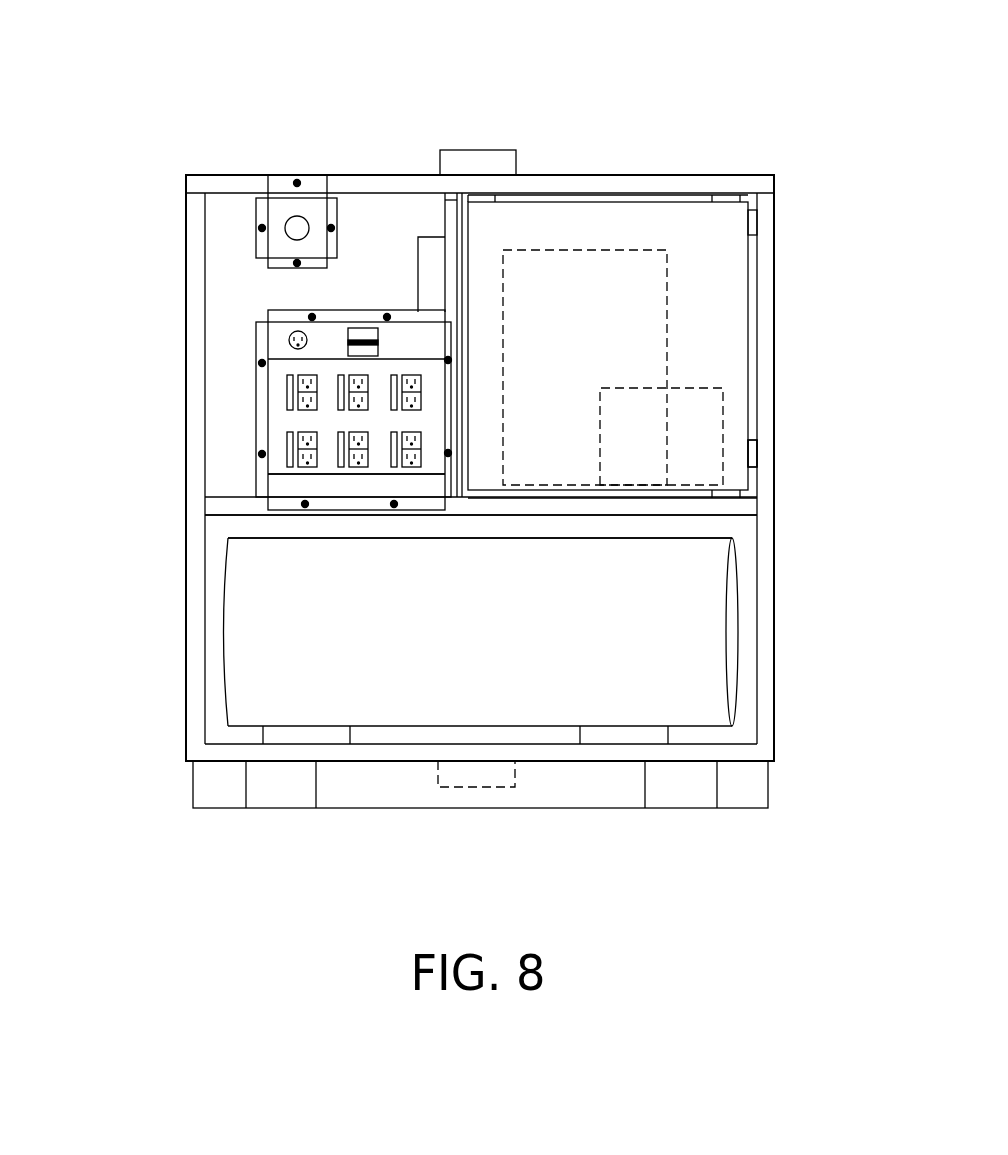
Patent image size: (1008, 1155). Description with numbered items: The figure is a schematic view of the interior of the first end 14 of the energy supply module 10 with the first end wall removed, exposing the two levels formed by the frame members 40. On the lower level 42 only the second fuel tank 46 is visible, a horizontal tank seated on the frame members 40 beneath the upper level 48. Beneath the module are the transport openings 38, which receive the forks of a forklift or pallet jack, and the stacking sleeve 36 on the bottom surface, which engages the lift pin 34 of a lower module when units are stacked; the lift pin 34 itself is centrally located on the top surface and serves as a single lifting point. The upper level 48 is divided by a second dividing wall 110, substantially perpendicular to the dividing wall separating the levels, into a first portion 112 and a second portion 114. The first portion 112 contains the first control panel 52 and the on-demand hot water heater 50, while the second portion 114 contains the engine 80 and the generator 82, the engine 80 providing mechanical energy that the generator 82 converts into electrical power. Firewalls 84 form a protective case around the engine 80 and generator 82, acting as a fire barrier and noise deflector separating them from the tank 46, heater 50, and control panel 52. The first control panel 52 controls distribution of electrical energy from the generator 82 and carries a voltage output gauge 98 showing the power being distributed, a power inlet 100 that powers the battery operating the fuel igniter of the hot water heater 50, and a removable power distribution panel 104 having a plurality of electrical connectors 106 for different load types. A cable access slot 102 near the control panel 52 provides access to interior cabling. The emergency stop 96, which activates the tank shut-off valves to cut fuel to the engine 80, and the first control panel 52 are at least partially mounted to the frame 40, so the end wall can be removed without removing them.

The energy supply module 10 is at (203, 88).
The first end 14 is at (228, 735).
The lift pin 34 is at (498, 163).
The stacking sleeve 36 is at (482, 772).
The transport openings 38 is at (682, 795).
The frame members 40 is at (777, 522).
The lower level 42 is at (757, 541).
The second fuel tank 46 is at (495, 641).
The upper level 48 is at (740, 447).
The hot water heater 50 is at (435, 238).
The first control panel 52 is at (245, 385).
The engine 80 is at (667, 312).
The generator 82 is at (725, 402).
The firewalls 84 is at (700, 242).
The emergency stop 96 is at (290, 178).
The voltage output gauge 98 is at (363, 333).
The power inlet 100 is at (289, 342).
The cable access slot 102 is at (352, 490).
The removable power distribution panel 104 is at (305, 421).
The electrical connectors 106 is at (306, 462).
The second dividing wall 110 is at (457, 200).
The first portion 112 is at (236, 234).
The second portion 114 is at (595, 230).